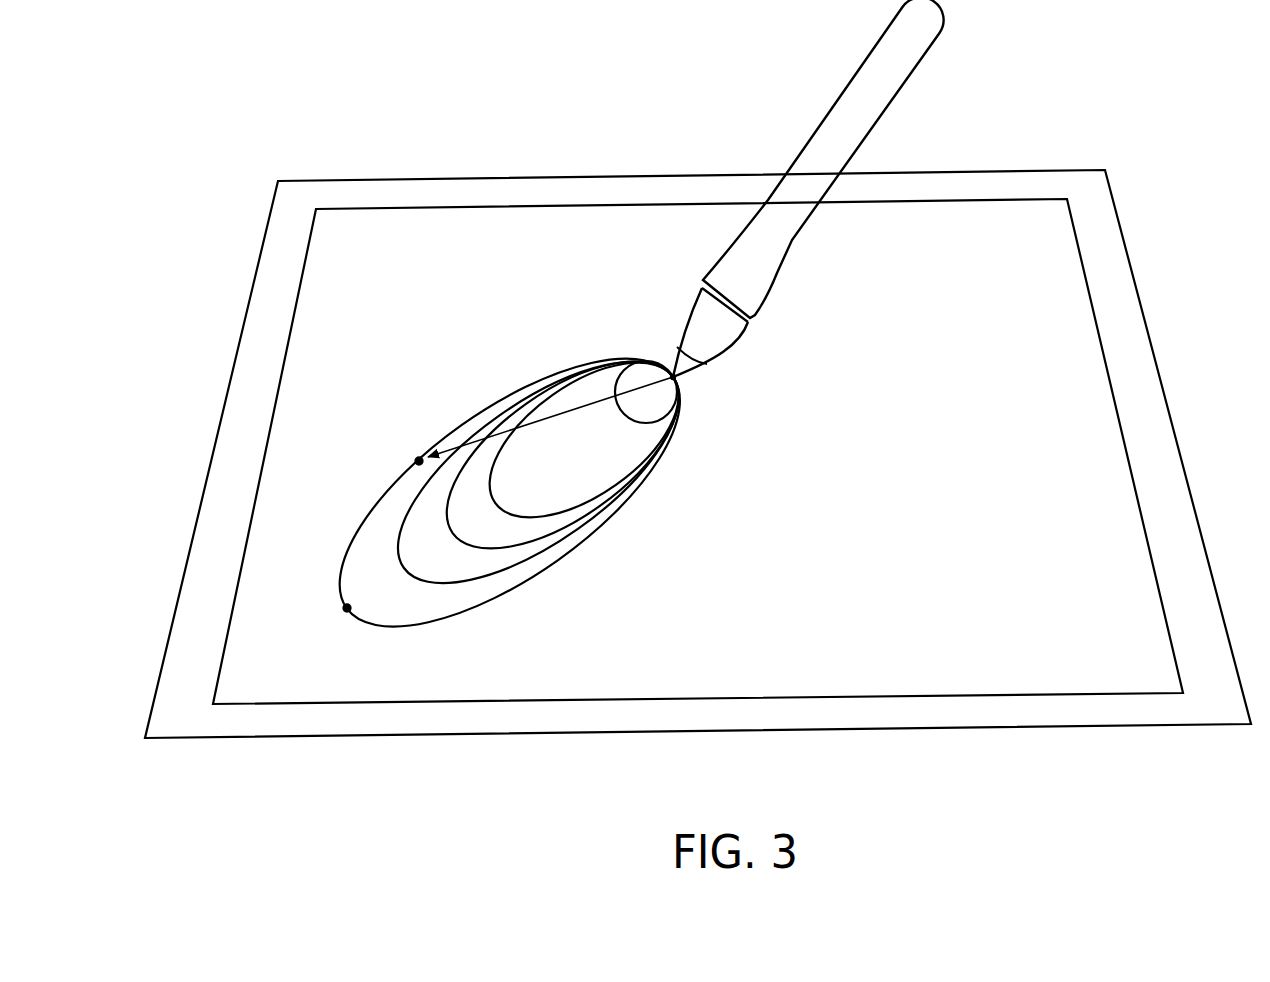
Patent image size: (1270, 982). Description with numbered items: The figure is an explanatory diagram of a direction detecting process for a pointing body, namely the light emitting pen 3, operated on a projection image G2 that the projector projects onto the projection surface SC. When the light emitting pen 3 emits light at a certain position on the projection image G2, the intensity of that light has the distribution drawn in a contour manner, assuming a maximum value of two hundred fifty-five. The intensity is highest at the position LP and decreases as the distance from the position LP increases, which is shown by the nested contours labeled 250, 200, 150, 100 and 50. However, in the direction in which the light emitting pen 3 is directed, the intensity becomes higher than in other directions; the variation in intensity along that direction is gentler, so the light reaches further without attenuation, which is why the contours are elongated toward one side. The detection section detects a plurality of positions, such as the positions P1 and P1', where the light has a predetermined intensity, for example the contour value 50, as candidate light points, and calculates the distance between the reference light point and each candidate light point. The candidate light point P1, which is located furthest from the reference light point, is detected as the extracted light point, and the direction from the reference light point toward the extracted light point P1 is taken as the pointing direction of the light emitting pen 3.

The light emitting pen 3 is at (842, 88).
The projection surface SC is at (1117, 290).
The projection image G2 is at (1018, 222).
The position at which the intensity of the light is the highest LP is at (683, 382).
The candidate light point P1 is at (313, 637).
The candidate light point P1' is at (536, 421).
The predetermined intensity 50 is at (510, 492).
The light intensity contour 100 is at (352, 604).
The light intensity contour 150 is at (413, 560).
The light intensity contour 200 is at (472, 520).
The light intensity contour 250 is at (515, 488).